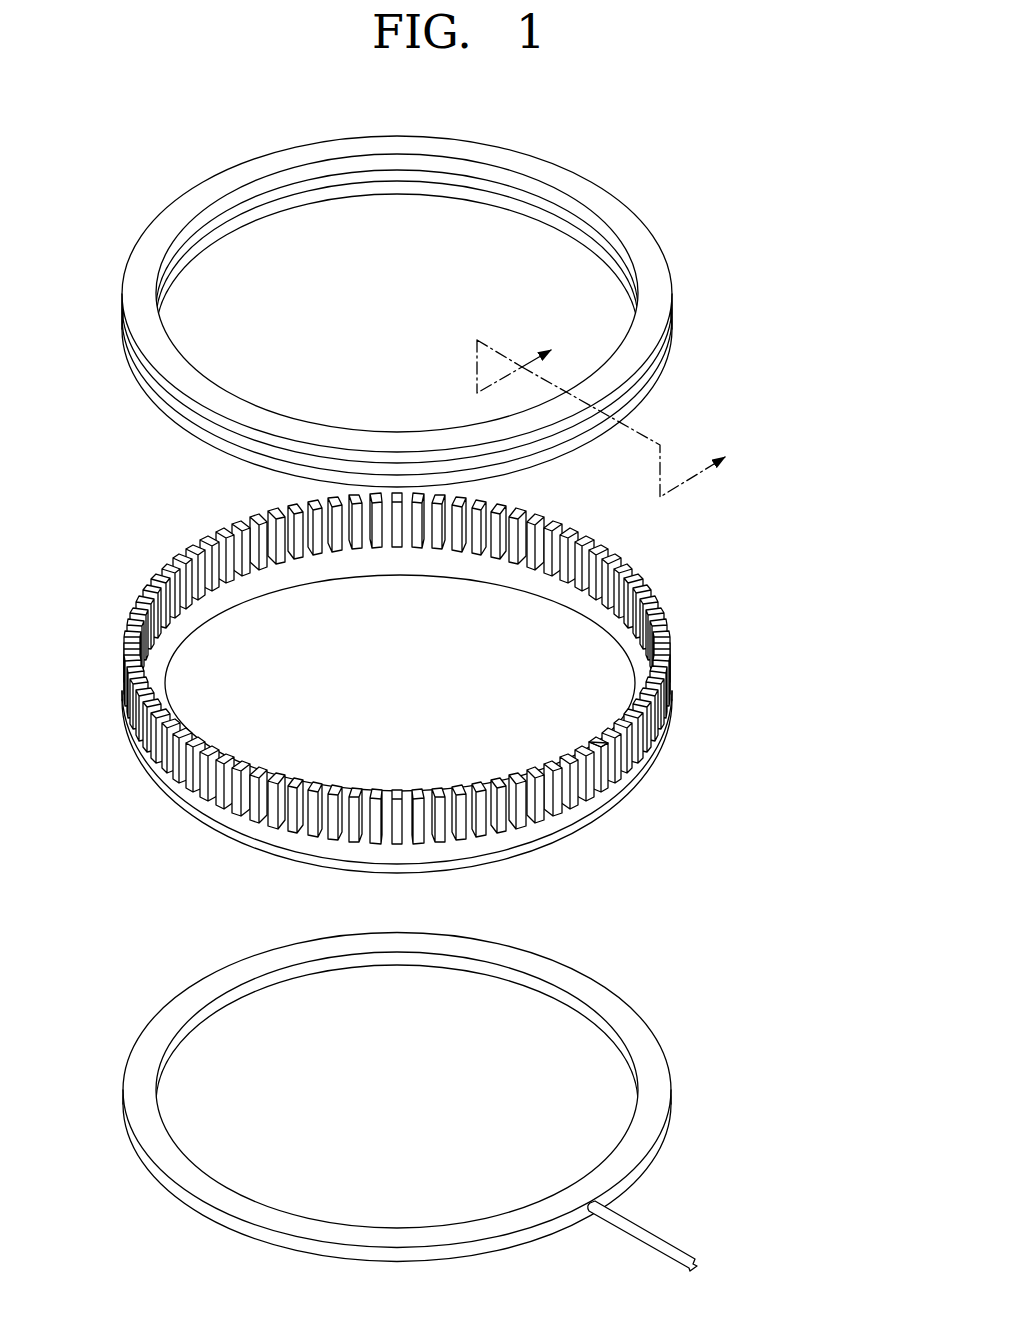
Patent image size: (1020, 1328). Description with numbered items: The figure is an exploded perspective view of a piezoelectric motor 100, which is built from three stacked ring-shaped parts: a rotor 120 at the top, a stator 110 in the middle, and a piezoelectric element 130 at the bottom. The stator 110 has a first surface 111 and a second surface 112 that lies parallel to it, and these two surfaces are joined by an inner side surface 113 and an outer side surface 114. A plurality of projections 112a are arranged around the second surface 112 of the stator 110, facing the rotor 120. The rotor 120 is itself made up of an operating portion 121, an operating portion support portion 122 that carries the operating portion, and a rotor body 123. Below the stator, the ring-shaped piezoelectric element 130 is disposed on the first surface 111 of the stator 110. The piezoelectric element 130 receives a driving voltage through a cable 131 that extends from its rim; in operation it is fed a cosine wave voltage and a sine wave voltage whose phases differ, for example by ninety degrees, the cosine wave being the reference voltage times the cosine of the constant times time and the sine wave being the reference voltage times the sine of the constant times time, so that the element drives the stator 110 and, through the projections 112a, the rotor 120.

The piezoelectric motor 100 is at (654, 136).
The stator 110 is at (446, 716).
The first surface 111 is at (577, 836).
The second surface 112 is at (443, 668).
The projections 112a is at (597, 789).
The inner side surface 113 is at (405, 570).
The outer side surface 114 is at (397, 815).
The rotor 120 is at (484, 316).
The operating portion 121 is at (786, 299).
The operating portion support portion 122 is at (648, 376).
The rotor body 123 is at (647, 342).
The piezoelectric element 130 is at (459, 1102).
The cable 131 is at (663, 1243).